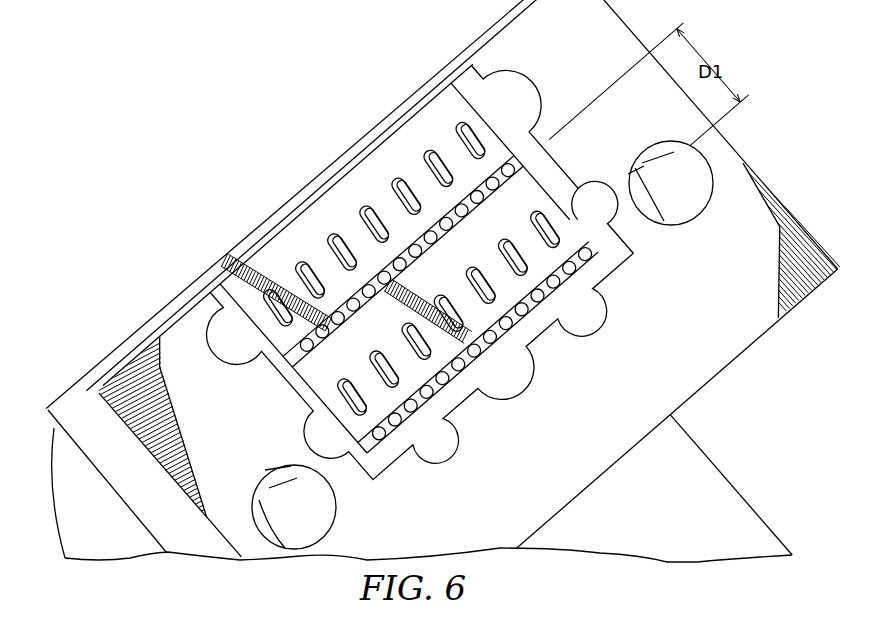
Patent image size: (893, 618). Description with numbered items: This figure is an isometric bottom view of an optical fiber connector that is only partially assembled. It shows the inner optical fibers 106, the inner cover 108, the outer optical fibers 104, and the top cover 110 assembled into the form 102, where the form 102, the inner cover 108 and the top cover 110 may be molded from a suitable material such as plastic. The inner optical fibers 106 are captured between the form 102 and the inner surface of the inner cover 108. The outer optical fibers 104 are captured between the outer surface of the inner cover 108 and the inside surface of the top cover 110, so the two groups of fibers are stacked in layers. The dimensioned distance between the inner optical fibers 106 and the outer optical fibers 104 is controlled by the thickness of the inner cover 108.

The form 102 is at (698, 364).
The outer optical fibers 104 is at (296, 370).
The inner optical fibers 106 is at (380, 470).
The inner cover 108 is at (312, 393).
The top cover 110 is at (313, 218).